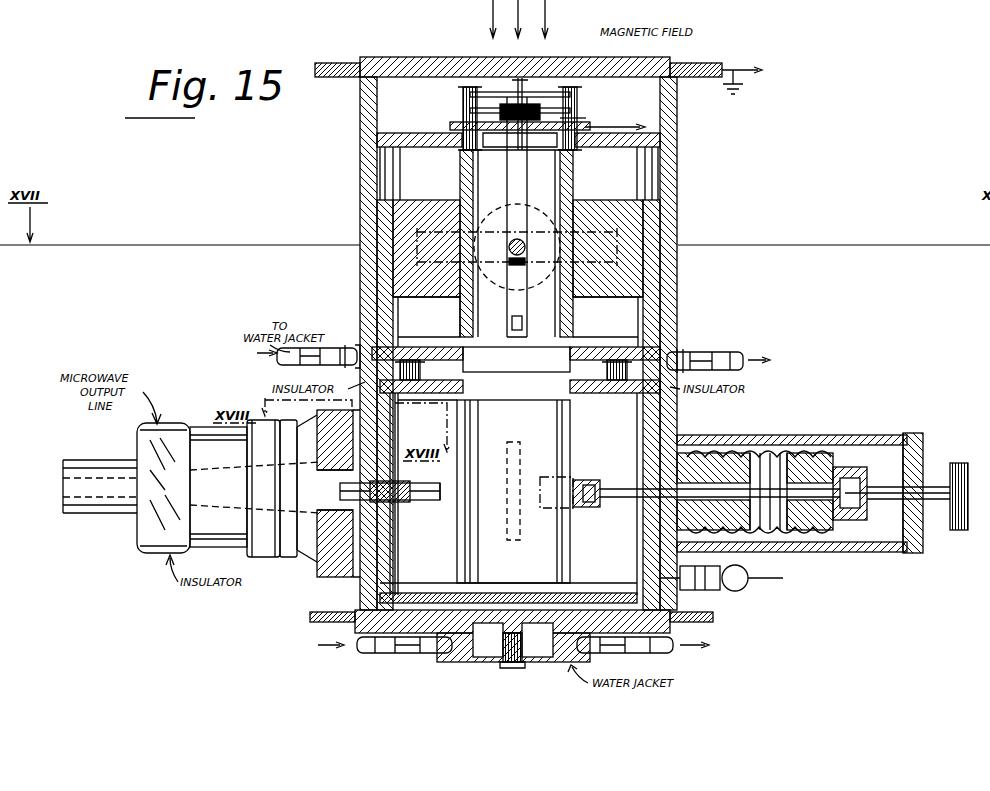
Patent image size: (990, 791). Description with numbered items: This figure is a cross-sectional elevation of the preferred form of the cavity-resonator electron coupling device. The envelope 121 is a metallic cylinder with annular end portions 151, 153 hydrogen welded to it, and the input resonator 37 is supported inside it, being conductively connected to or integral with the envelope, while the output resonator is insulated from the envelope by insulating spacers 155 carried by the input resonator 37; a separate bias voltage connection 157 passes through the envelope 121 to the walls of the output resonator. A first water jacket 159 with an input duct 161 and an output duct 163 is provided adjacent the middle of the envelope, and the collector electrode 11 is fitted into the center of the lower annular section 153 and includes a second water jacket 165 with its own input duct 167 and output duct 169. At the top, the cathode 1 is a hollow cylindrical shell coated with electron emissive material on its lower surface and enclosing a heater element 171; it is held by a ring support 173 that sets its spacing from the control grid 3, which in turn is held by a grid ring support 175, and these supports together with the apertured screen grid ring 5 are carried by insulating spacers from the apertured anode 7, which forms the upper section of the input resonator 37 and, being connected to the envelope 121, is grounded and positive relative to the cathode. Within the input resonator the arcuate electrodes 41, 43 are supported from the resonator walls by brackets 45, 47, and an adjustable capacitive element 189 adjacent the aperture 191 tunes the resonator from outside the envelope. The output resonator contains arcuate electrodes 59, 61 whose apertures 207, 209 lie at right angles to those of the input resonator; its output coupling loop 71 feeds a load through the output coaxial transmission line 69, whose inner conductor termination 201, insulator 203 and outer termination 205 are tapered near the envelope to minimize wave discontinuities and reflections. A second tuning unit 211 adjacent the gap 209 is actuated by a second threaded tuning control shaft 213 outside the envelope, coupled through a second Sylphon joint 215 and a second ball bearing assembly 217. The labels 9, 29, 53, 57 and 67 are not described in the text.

The cathode 1 is at (503, 134).
The control grid 3 is at (572, 113).
The apertured screen grid ring 5 is at (586, 118).
The apertured anode 7 is at (596, 148).
The magnetic field 9 is at (510, 20).
The collector electrode 11 is at (560, 603).
The output chamber 29 is at (442, 560).
The input resonator 37 is at (420, 319).
The arcuate electrode 41 is at (470, 320).
The arcuate electrode 43 is at (570, 320).
The bracket 45 is at (428, 203).
The bracket 47 is at (608, 204).
The anode cavity 53 is at (505, 160).
The resonant chamber wall 57 is at (495, 392).
The arcuate electrode 59 is at (555, 356).
The arcuate electrode 61 is at (523, 533).
The chamber bottom 67 is at (470, 593).
The output coaxial transmission line 69 is at (268, 557).
The output coupling loop 71 is at (415, 500).
The envelope 121 is at (678, 216).
The annular end portion 151 is at (618, 62).
The annular end portion 153 is at (670, 630).
The insulating spacers 155 is at (408, 370).
The bias voltage connection 157 is at (748, 586).
The first water jacket 159 is at (350, 346).
The input duct 161 is at (290, 366).
The output duct 163 is at (725, 351).
The second water jacket 165 is at (495, 655).
The input duct 167 is at (375, 655).
The output duct 169 is at (672, 652).
The heater element 171 is at (512, 100).
The ring support 173 is at (548, 90).
The grid ring support 175 is at (466, 104).
The adjustable capacitive element 189 is at (519, 235).
The aperture 191 is at (522, 325).
The inner transmission line conductor termination 201 is at (86, 460).
The insulator 203 is at (155, 553).
The outer coaxial line termination 205 is at (287, 557).
The aperture 207 is at (460, 485).
The aperture 209 is at (568, 476).
The second tuning unit 211 is at (582, 508).
The second threaded tuning control shaft 213 is at (950, 475).
The second Sylphon joint 215 is at (765, 444).
The second ball bearing assembly 217 is at (852, 470).